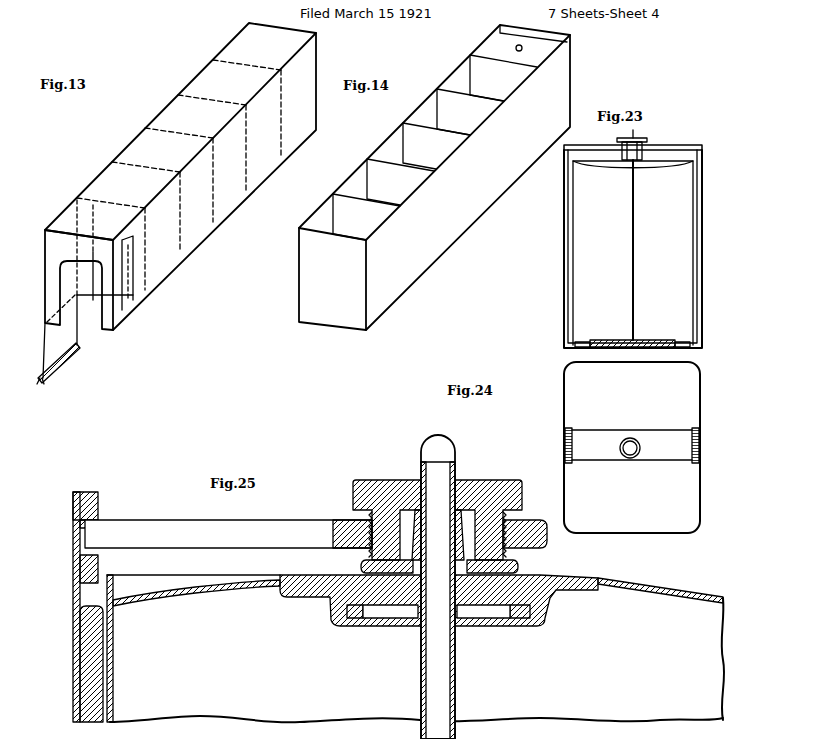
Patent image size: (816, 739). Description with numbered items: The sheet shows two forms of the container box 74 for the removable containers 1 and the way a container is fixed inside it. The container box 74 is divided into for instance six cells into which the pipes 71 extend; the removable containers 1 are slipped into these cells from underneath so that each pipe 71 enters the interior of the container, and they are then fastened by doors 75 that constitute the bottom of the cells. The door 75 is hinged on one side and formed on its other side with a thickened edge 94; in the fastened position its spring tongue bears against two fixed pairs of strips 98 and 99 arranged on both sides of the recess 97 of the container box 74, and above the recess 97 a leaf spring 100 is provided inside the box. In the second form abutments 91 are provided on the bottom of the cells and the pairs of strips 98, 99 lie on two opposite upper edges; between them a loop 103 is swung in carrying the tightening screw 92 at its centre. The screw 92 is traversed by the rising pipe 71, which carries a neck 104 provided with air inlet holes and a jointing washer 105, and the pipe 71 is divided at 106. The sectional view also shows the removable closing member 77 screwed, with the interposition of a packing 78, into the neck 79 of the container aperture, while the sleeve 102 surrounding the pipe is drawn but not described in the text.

In FIG. 23, the removable container 1 is at (574, 257).
In FIG. 25, the removable container 1 is at (620, 583).
In FIG. 13, the pipe 71 is at (267, 45).
In FIG. 14, the pipe 71 is at (516, 45).
In FIG. 23, the pipe 71 is at (643, 235).
In FIG. 25, the pipe 71 is at (441, 446).
In FIG. 13, the container box 74 is at (180, 176).
In FIG. 14, the container box 74 is at (434, 177).
In FIG. 23, the container box 74 is at (564, 278).
In FIG. 24, the container box 74 is at (699, 497).
In FIG. 25, the container box 74 is at (76, 608).
In FIG. 13, the door 75 is at (45, 344).
In FIG. 25, the closing member 77 is at (487, 607).
In FIG. 25, the packing 78 is at (368, 613).
In FIG. 25, the neck 79 is at (570, 590).
In FIG. 23, the abutment 91 is at (650, 341).
In FIG. 23, the screw 92 is at (640, 148).
In FIG. 25, the screw 92 is at (388, 492).
In FIG. 13, the thickened edge 94 is at (60, 378).
In FIG. 13, the recess 97 is at (128, 314).
In FIG. 23, the strip 98 is at (566, 146).
In FIG. 24, the strip 98 is at (699, 434).
In FIG. 25, the strip 98 is at (100, 500).
In FIG. 23, the strip 99 is at (551, 173).
In FIG. 24, the strip 99 is at (566, 438).
In FIG. 25, the strip 99 is at (99, 569).
In FIG. 13, the leaf spring 100 is at (142, 300).
In FIG. 25, the insulating sleeve 102 is at (468, 557).
In FIG. 24, the loop 103 is at (608, 453).
In FIG. 25, the loop 103 is at (316, 534).
In FIG. 25, the neck 104 is at (516, 565).
In FIG. 25, the jointing washer 105 is at (362, 568).
In FIG. 14, the division of rising pipe 106 is at (468, 37).